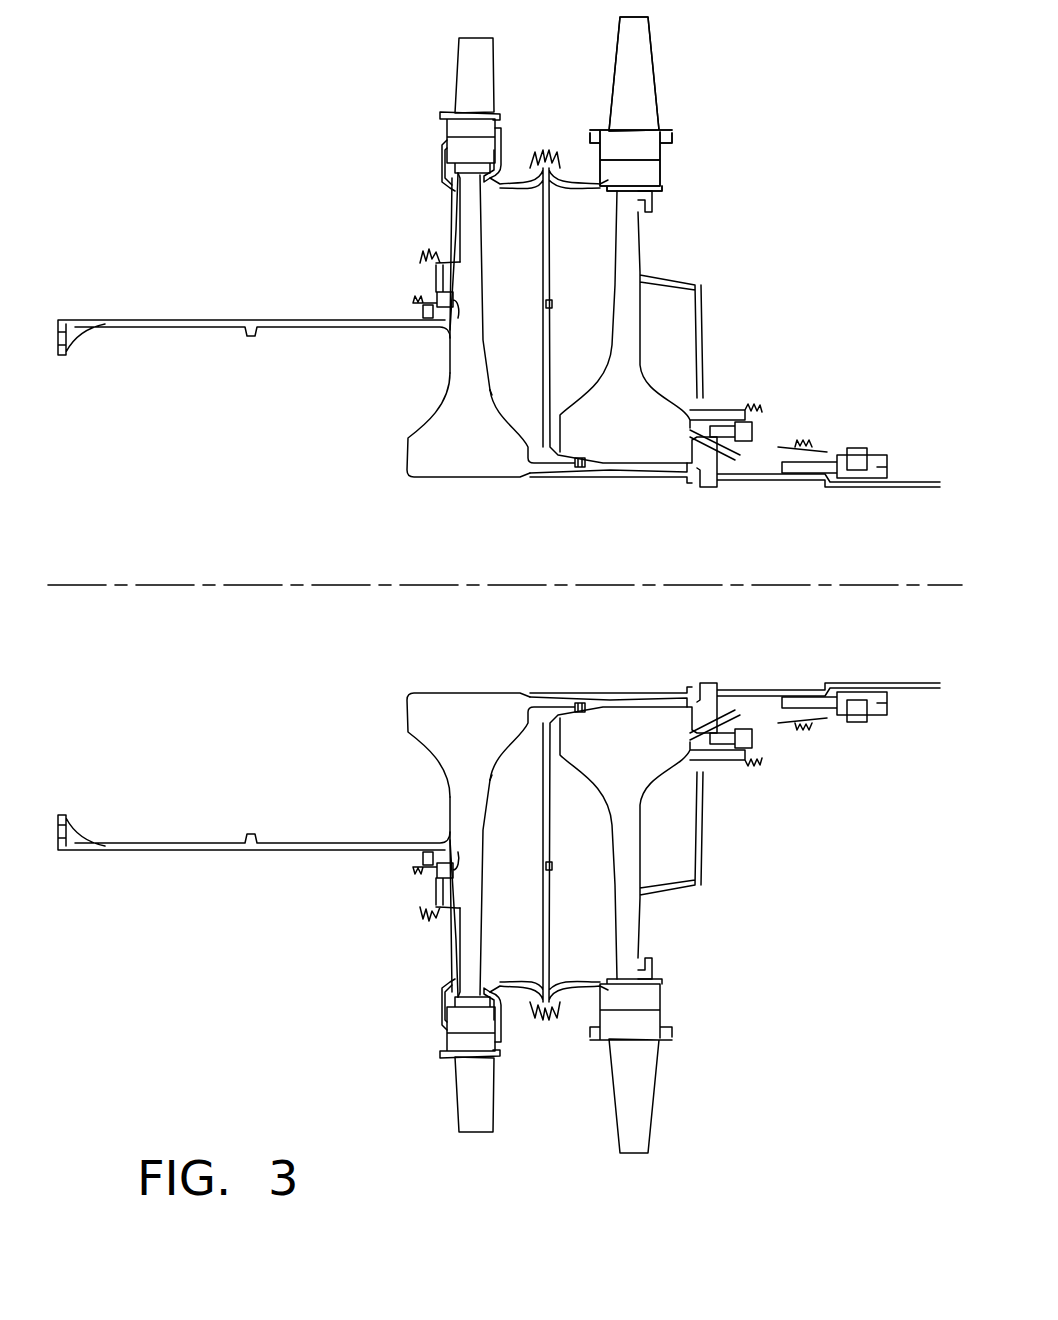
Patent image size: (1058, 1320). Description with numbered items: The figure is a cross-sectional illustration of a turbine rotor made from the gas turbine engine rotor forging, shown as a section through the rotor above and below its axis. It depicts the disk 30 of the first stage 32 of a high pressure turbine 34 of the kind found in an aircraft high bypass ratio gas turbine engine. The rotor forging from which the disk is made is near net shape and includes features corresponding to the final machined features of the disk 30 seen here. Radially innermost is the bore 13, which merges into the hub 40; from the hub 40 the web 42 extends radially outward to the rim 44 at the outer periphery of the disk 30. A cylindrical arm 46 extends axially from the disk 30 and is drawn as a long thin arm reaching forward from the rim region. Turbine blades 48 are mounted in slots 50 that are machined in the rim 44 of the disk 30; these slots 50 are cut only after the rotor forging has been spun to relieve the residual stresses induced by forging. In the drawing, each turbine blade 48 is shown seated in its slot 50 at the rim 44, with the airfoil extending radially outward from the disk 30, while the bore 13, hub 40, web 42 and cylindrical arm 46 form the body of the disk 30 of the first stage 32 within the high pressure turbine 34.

The bore 13 is at (457, 478).
The disk 30 is at (473, 263).
The first stage 32 is at (511, 47).
The high pressure turbine 34 is at (335, 262).
The hub 40 is at (413, 440).
The web 42 is at (480, 214).
The rim 44 is at (447, 126).
The cylindrical arm 46 is at (197, 323).
The turbine blades 48 is at (458, 64).
The slots 50 is at (480, 140).